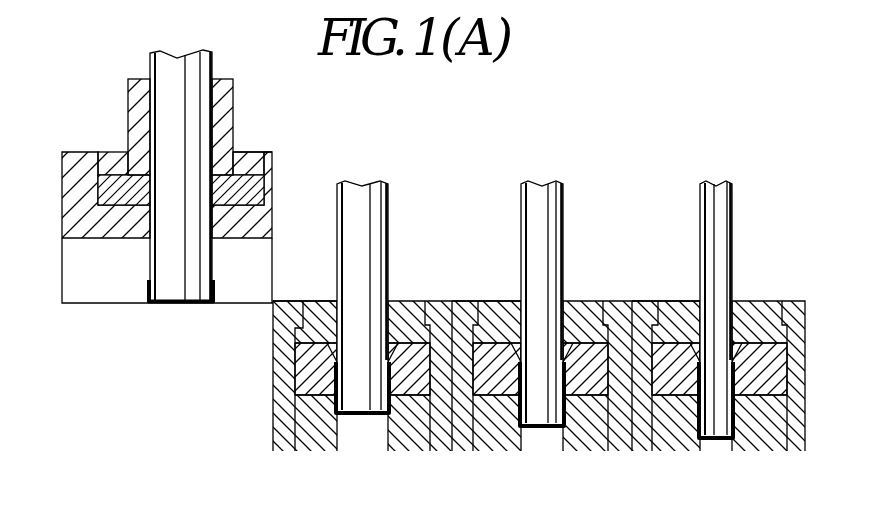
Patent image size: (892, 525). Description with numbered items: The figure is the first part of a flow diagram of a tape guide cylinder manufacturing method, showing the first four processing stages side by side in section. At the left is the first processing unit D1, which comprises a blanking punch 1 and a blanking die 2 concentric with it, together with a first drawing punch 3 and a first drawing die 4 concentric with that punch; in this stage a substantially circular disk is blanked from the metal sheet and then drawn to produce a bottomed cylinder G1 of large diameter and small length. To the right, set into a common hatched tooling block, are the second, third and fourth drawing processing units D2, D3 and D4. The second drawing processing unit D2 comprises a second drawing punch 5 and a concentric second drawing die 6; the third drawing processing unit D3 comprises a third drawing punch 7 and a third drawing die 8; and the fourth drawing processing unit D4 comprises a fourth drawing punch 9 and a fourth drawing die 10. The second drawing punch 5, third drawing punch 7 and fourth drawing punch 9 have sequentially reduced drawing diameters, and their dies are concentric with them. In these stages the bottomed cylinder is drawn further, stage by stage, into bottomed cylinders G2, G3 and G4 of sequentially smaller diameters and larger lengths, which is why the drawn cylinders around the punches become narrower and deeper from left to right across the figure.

The blanking punch 1 is at (137, 108).
The blanking die 2 is at (122, 172).
The first drawing punch 3 is at (163, 246).
The first drawing die 4 is at (110, 195).
The second drawing punch 5 is at (373, 266).
The second drawing die 6 is at (303, 383).
The third drawing punch 7 is at (550, 268).
The third drawing die 8 is at (495, 385).
The fourth drawing punch 9 is at (724, 277).
The fourth drawing die 10 is at (678, 380).
The first processing unit D1 is at (250, 152).
The second drawing processing unit D2 is at (316, 300).
The third drawing processing unit D3 is at (503, 300).
The fourth drawing processing unit D4 is at (677, 300).
The bottomed cylinder G1 is at (170, 305).
The bottomed cylinder G2 is at (362, 416).
The bottomed cylinder G3 is at (541, 428).
The bottomed cylinder G4 is at (717, 441).